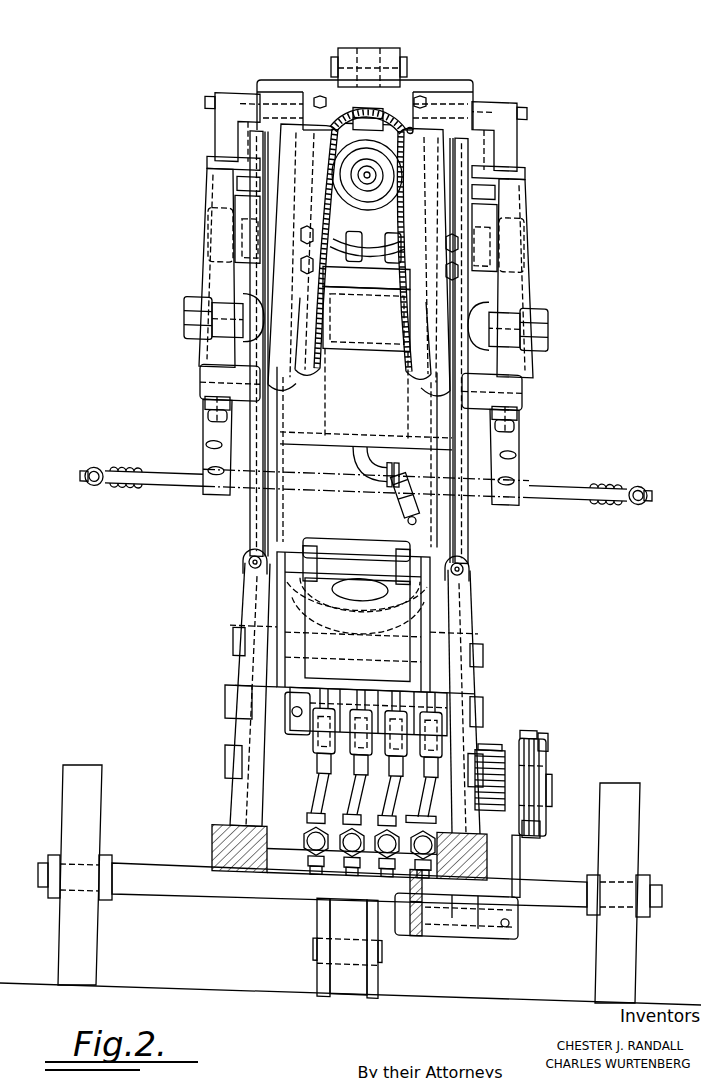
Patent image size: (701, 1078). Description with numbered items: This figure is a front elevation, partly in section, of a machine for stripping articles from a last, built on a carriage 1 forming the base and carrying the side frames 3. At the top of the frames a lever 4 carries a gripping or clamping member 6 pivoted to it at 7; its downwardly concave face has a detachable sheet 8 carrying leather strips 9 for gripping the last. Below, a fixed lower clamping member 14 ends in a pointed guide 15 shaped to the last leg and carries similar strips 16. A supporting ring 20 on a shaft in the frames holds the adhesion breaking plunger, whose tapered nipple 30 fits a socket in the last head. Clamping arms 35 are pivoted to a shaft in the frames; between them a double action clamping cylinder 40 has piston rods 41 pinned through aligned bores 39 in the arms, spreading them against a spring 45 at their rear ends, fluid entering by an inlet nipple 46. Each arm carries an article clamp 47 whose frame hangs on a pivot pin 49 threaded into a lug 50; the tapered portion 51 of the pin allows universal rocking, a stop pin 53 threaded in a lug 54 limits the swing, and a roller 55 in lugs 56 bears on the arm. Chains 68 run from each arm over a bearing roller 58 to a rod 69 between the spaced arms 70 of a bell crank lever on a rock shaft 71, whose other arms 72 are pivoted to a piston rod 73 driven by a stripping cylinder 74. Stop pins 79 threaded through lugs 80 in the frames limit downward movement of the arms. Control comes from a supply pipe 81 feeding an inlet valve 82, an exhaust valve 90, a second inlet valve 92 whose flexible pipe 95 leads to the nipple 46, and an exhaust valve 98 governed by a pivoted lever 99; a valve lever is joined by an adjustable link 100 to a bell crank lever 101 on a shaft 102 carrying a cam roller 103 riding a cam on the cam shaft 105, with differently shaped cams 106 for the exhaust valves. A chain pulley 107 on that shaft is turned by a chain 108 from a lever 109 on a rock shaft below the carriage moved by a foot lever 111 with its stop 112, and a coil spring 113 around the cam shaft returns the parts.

The carriage 1 is at (205, 855).
The side frames 3 is at (474, 553).
The lever 4 is at (382, 50).
The gripping or clamping member 6 is at (328, 84).
The pivotal connection 7 is at (404, 67).
The detachable sheet 8 is at (368, 101).
The strips 9 is at (368, 119).
The fixed lower gripping or clamping member 14 is at (350, 262).
The pointed guide 15 is at (392, 262).
The strips 16 is at (355, 208).
The supporting ring 20 is at (414, 126).
The tapered nipple 30 is at (368, 180).
The clamping arms 35 is at (205, 255).
The bores 39 is at (208, 475).
The double action clamping cylinder 40 is at (333, 447).
The piston rods 41 is at (262, 352).
The spring 45 is at (592, 496).
The inlet nipple 46 is at (358, 479).
The article clamp 47 is at (319, 371).
The pivot pin 49 is at (186, 310).
The lug 50 is at (250, 296).
The oppositely tapered portion 51 is at (214, 336).
The stop pin 53 is at (212, 220).
The lug 54 is at (249, 225).
The roller 55 is at (210, 166).
The lugs 56 is at (240, 187).
The bearing roller 58 is at (230, 140).
The chains 68 is at (252, 518).
The rod 69 is at (466, 573).
The spaced arms 70 is at (282, 600).
The rock shaft 71 is at (233, 646).
The spaced arms 72 is at (330, 608).
The piston rod 73 is at (358, 540).
The stripping cylinder 74 is at (245, 692).
The stop pins 79 is at (207, 412).
The lugs 80 is at (201, 382).
The supply pipe 81 is at (436, 817).
The inlet valve 82 is at (387, 870).
The exhaust valve 90 is at (352, 870).
The second inlet valve 92 is at (316, 870).
The flexible pipe 95 is at (418, 514).
The exhaust valve 98 is at (302, 845).
The pivoted lever 99 is at (312, 795).
The adjustable link 100 is at (312, 736).
The bell crank lever 101 is at (325, 692).
The shaft 102 is at (226, 712).
The cam roller 103 is at (350, 820).
The cam shaft 105 is at (552, 773).
The cams 106 is at (317, 762).
The chain pulley 107 is at (549, 735).
The chain 108 is at (531, 725).
The lever 109 is at (518, 862).
The foot lever 111 is at (416, 934).
The stop 112 is at (422, 884).
The coil spring 113 is at (490, 746).